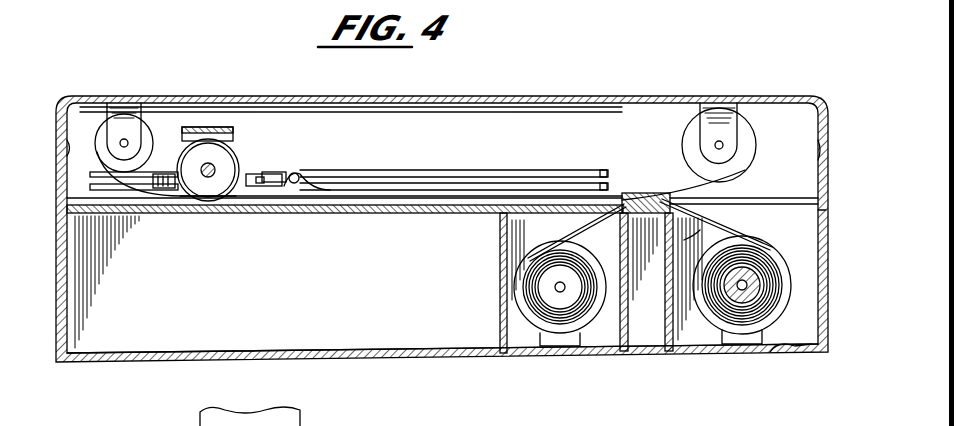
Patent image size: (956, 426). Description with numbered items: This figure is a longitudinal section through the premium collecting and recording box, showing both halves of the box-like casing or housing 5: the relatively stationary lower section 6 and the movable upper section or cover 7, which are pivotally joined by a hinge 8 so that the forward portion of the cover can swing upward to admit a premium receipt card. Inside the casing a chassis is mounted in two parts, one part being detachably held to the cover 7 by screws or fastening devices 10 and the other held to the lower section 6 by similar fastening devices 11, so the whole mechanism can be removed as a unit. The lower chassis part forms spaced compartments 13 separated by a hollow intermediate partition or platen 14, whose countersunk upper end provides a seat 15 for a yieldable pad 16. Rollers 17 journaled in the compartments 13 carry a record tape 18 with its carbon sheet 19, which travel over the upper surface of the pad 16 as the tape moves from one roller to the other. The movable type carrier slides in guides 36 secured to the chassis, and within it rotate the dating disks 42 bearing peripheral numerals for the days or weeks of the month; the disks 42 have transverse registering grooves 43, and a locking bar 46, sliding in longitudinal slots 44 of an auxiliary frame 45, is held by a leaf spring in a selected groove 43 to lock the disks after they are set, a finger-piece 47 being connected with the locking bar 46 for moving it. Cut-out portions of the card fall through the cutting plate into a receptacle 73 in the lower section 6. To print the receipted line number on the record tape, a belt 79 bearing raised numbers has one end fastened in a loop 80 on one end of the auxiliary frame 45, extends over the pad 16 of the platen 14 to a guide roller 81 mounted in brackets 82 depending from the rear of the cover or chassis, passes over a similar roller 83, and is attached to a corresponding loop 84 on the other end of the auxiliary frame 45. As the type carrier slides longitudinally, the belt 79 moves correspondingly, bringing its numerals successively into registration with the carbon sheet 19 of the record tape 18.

The box-like casing or housing 5 is at (652, 90).
The lower section 6 is at (388, 356).
The upper section or cover 7 is at (435, 172).
The hinge 8 is at (820, 214).
The fastening devices 10 is at (75, 126).
The fastening devices 11 is at (504, 338).
The compartments 13 is at (796, 373).
The intermediate partition or platen 14 is at (622, 322).
The seat 15 is at (653, 282).
The yieldable pad 16 is at (642, 190).
The rollers 17 is at (511, 314).
The record tape 18 is at (690, 249).
The carbon sheet 19 is at (598, 224).
The guides 36 is at (455, 190).
The disks 42 is at (203, 136).
The registering grooves 43 is at (226, 134).
The longitudinal slots 44 is at (283, 170).
The auxiliary frame 45 is at (290, 196).
The locking bar 46 is at (232, 216).
The finger-piece 47 is at (278, 170).
The receptacle 73 is at (178, 322).
The belt 79 is at (556, 110).
The loop 80 is at (306, 173).
The guide roller 81 is at (742, 140).
The brackets 82 is at (722, 110).
The roller 83 is at (150, 140).
The loop 84 is at (165, 216).